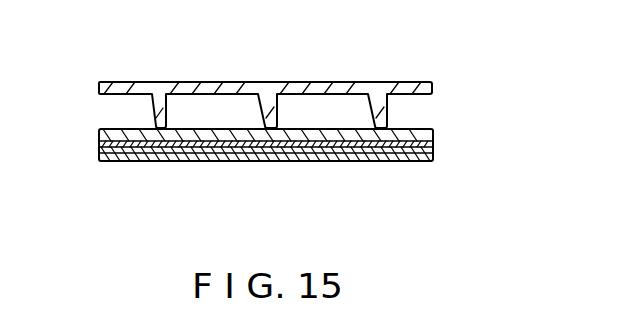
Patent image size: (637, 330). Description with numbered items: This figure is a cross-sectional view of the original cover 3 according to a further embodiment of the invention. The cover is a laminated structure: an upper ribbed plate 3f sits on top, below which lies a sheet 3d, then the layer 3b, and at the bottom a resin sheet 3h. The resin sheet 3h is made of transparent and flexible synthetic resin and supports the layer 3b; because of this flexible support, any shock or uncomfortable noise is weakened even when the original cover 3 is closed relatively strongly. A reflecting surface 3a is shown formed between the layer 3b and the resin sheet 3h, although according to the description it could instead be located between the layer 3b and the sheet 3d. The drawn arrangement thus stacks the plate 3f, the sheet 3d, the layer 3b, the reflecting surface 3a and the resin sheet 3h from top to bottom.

The original cover 3 is at (302, 129).
The ribbed top plate 3f is at (432, 87).
The sheet 3d is at (418, 131).
The layer 3b is at (433, 143).
The reflecting surface 3a is at (433, 150).
The resin sheet 3h is at (415, 161).